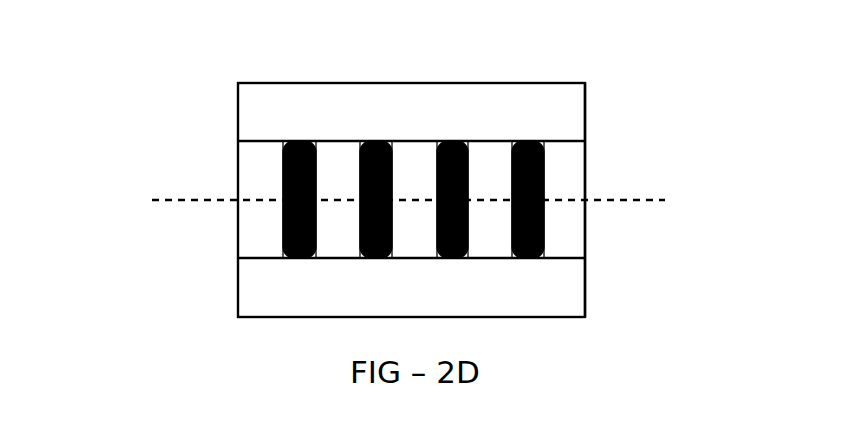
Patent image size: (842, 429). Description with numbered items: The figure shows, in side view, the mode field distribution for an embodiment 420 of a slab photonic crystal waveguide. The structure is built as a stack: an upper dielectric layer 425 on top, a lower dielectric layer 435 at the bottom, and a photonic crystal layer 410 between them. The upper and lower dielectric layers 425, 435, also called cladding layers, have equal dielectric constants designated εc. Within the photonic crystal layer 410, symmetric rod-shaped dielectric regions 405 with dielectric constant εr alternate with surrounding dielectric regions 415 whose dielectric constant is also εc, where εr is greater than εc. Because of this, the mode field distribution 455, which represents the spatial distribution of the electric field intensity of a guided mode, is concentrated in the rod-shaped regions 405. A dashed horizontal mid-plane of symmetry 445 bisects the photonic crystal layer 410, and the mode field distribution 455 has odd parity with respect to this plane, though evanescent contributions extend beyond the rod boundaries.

The rod-shaped dielectric regions 405 is at (545, 207).
The photonic crystal layer 410 is at (585, 183).
The surrounding dielectric regions 415 is at (255, 233).
The slab photonic crystal waveguide embodiment 420 is at (633, 82).
The upper dielectric layer 425 is at (315, 108).
The lower dielectric layer 435 is at (287, 285).
The horizontal mid-plane of symmetry 445 is at (610, 202).
The mode field distribution 455 is at (316, 157).